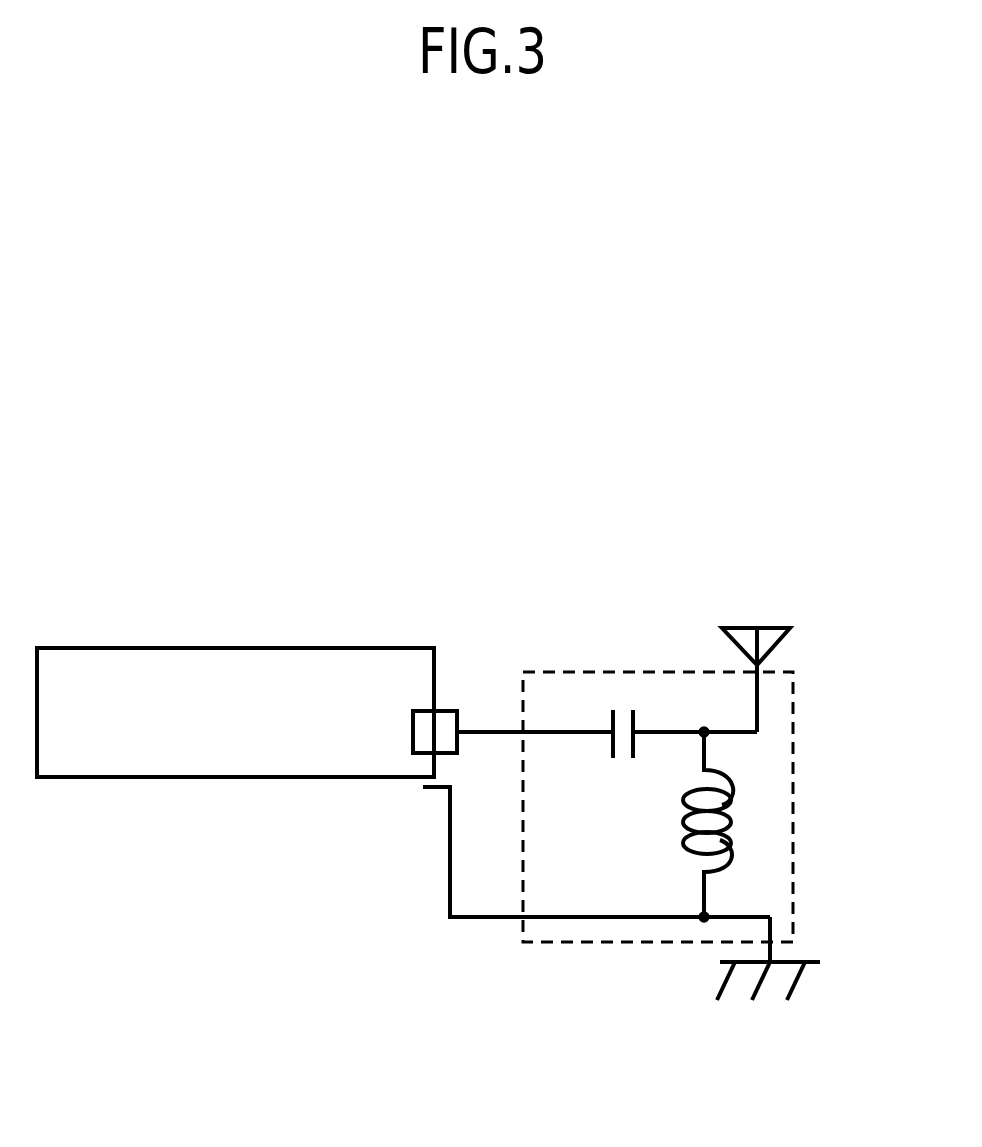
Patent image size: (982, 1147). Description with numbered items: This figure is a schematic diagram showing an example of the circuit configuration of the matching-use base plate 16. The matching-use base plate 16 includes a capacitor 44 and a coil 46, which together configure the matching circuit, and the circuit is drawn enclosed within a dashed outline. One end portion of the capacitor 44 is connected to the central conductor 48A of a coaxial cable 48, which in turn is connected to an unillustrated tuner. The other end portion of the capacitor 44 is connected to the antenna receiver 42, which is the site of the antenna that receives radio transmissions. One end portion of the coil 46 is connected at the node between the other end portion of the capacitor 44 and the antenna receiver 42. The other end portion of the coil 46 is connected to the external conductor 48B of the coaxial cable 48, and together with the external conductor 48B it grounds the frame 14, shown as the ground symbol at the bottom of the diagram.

The coaxial cable 48 is at (258, 645).
The central conductor 48A is at (452, 711).
The external conductor 48B is at (448, 865).
The capacitor 44 is at (622, 710).
The antenna receiver 42 is at (767, 630).
The coil 46 is at (683, 823).
The matching-use base plate 16 is at (793, 742).
The frame 14 is at (782, 980).